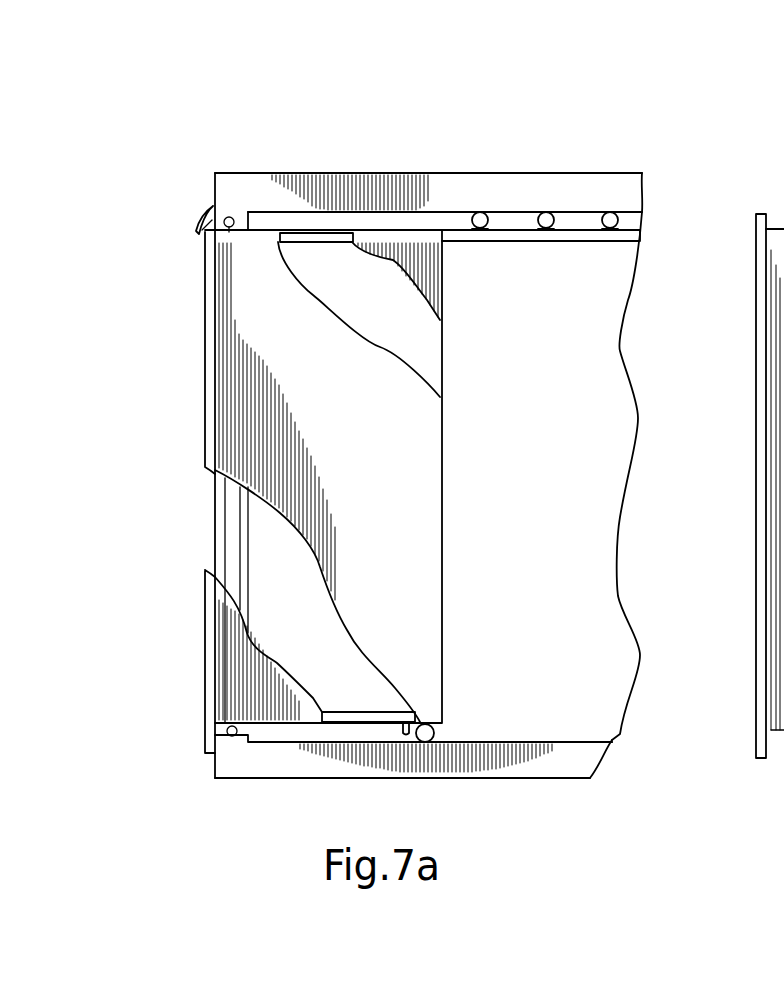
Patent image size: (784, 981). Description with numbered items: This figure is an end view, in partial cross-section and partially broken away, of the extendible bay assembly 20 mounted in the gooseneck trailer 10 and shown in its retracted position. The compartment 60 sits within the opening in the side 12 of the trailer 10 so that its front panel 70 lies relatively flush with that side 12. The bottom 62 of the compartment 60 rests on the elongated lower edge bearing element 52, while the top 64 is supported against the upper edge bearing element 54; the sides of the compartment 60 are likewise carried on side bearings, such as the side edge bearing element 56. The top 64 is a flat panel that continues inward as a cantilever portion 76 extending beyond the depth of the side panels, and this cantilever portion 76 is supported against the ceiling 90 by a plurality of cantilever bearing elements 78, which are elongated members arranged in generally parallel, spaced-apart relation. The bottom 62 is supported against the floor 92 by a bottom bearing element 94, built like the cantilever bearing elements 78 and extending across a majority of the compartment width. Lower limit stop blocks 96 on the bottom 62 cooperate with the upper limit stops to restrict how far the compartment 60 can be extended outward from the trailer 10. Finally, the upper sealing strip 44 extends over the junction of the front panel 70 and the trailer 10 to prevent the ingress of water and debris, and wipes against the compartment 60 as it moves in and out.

The gooseneck trailer 10 is at (683, 118).
The side 12 is at (213, 175).
The extendible bay assembly 20 is at (484, 472).
The upper sealing strip 44 is at (211, 210).
The lower edge bearing element 52 is at (230, 726).
The upper edge bearing element 54 is at (229, 232).
The side edge bearing element 56 is at (230, 547).
The compartment 60 is at (337, 452).
The bottom 62 is at (380, 718).
The top 64 is at (320, 247).
The front panel 70 is at (205, 412).
The cantilever portion 76 is at (481, 243).
The cantilever bearing elements 78 is at (480, 210).
The ceiling 90 is at (573, 212).
The floor 92 is at (510, 740).
The bottom bearing element 94 is at (425, 742).
The lower limit stop blocks 96 is at (393, 733).